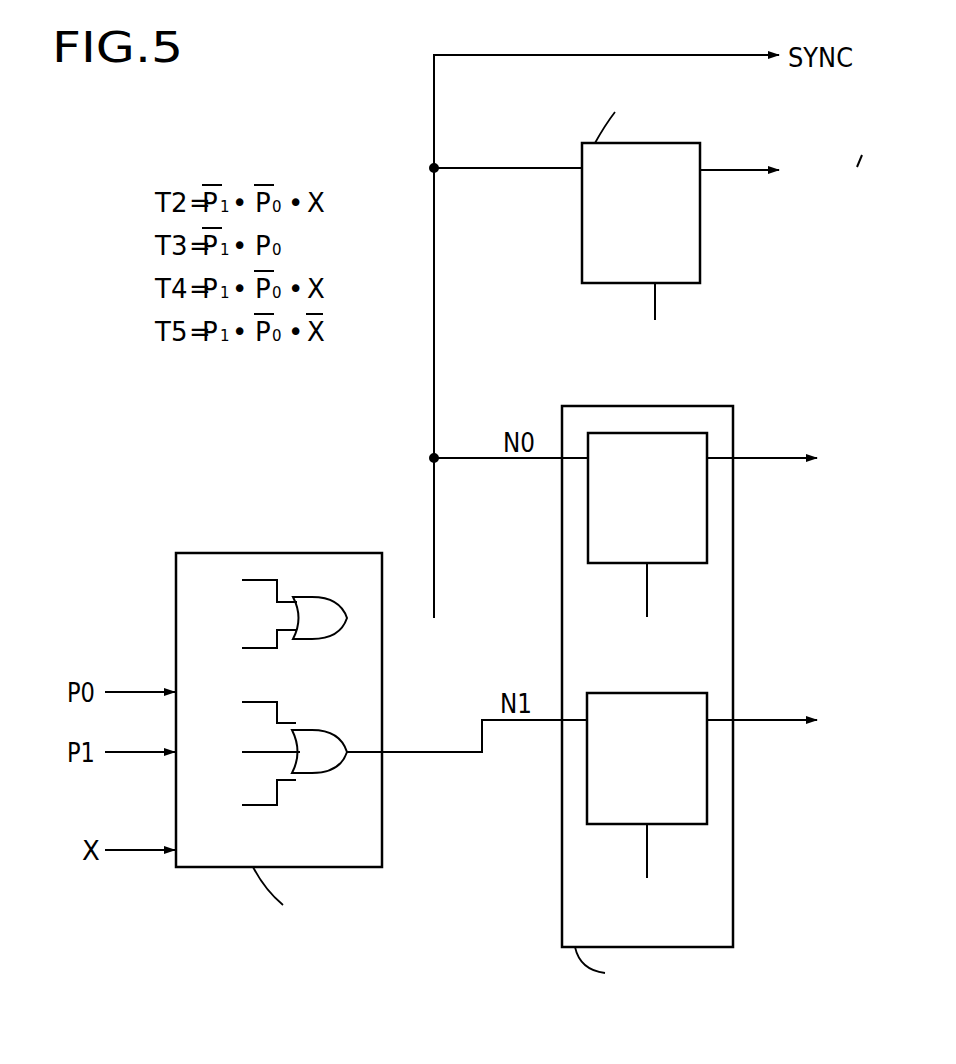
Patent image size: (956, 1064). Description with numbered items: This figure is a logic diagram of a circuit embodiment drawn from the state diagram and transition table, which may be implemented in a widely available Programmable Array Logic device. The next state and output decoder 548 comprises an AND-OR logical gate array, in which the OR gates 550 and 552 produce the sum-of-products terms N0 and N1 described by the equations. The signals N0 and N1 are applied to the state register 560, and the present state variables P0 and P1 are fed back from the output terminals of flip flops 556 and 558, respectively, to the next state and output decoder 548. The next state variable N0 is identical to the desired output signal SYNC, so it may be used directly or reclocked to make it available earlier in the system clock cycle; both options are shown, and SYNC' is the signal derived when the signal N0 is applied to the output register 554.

The next state and output decoder 548 is at (324, 758).
The OR gate 550 is at (320, 636).
The OR gate 552 is at (320, 767).
The output register 554 is at (700, 240).
The flip flop 556 is at (612, 563).
The flip flop 558 is at (617, 824).
The state register 560 is at (692, 711).